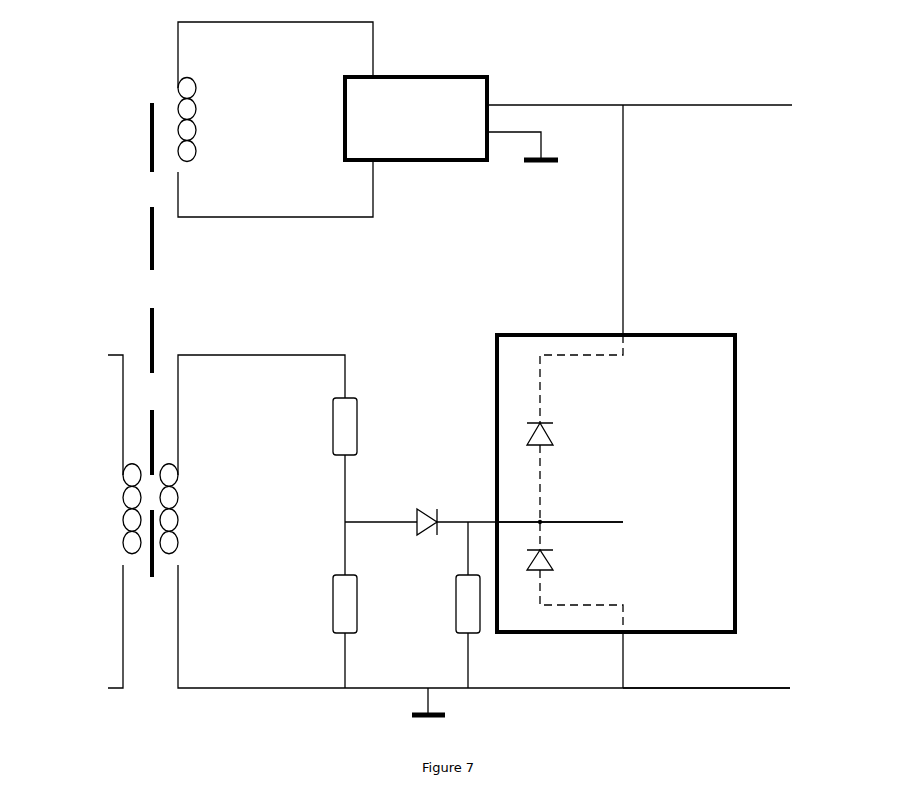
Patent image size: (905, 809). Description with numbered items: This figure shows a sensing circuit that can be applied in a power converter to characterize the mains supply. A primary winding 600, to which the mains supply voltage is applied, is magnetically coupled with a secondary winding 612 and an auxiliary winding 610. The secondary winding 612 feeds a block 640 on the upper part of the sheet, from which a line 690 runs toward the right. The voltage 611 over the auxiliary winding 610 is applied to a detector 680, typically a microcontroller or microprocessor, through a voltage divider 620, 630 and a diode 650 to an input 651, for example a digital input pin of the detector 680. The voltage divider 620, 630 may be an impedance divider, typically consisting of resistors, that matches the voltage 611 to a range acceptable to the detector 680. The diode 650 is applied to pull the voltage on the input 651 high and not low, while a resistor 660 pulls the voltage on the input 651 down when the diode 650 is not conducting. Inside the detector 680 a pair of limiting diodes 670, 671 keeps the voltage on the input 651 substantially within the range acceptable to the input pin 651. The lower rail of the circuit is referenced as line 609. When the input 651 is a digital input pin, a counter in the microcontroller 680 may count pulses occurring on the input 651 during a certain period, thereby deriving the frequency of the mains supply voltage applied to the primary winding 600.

The primary winding 600 is at (114, 522).
The ground reference line 609 is at (797, 688).
The auxiliary winding 610 is at (190, 522).
The voltage over the auxiliary winding 611 is at (240, 350).
The secondary winding 612 is at (208, 125).
The voltage divider resistor 620 is at (322, 410).
The voltage divider resistor 630 is at (322, 605).
The controller 640 is at (342, 126).
The diode 650 is at (428, 506).
The input 651 is at (628, 516).
The resistor 660 is at (452, 621).
The limiting diode 670 is at (553, 432).
The limiting diode 671 is at (560, 555).
The detector 680 is at (747, 550).
The supply line 690 is at (805, 105).